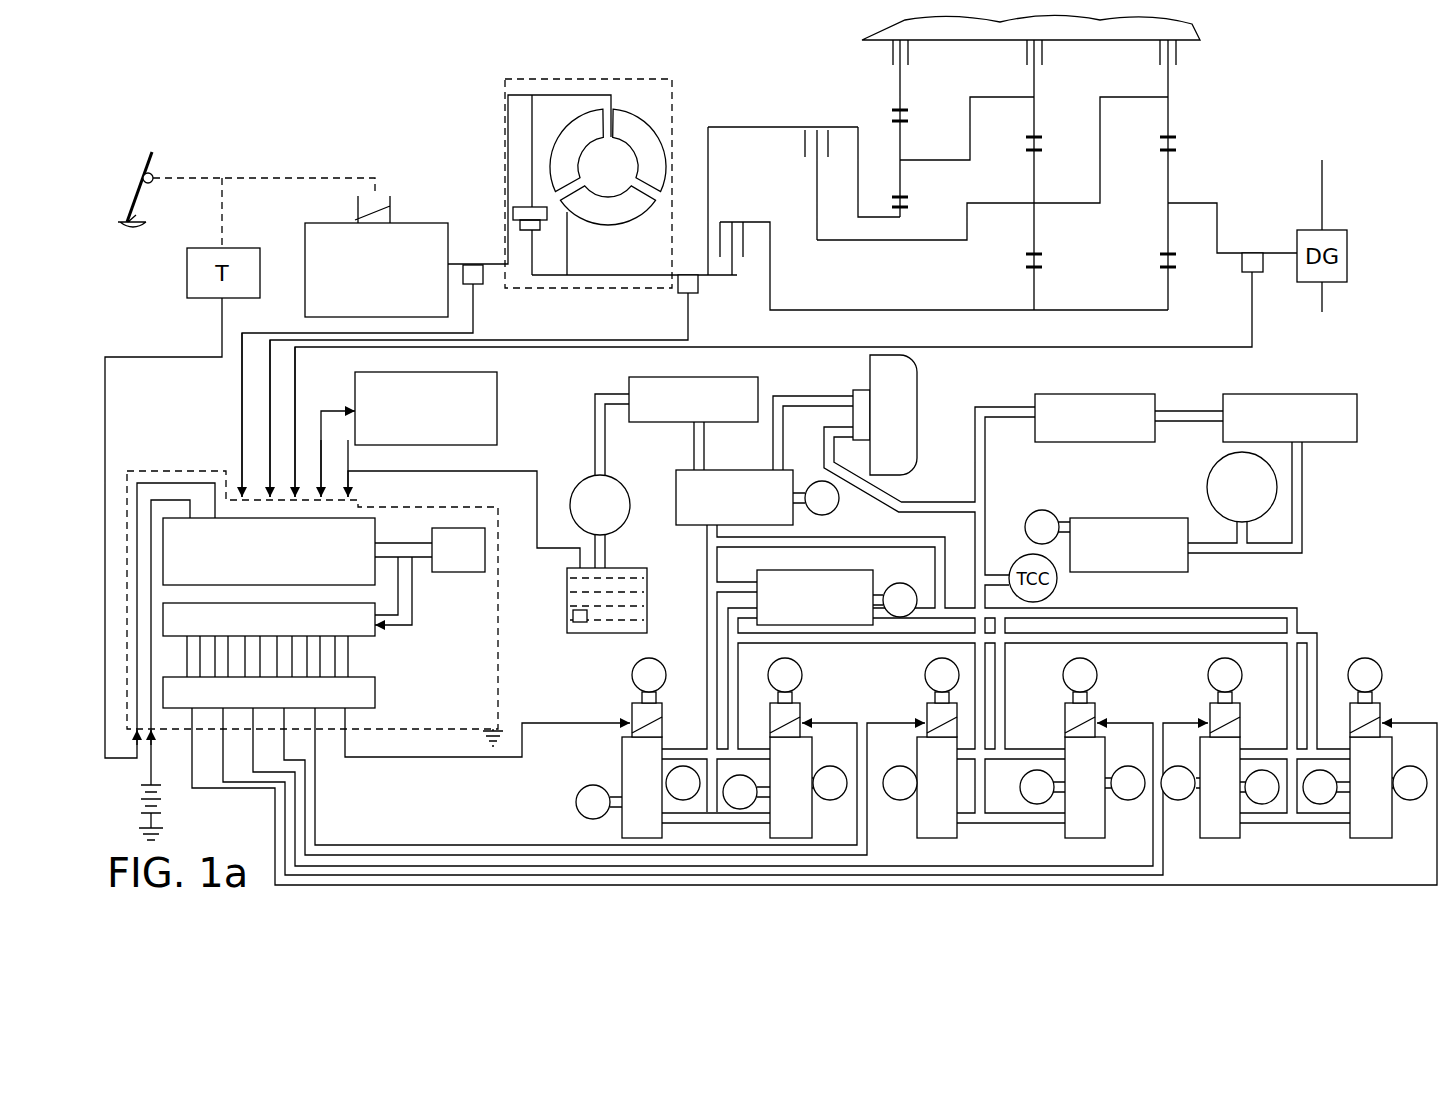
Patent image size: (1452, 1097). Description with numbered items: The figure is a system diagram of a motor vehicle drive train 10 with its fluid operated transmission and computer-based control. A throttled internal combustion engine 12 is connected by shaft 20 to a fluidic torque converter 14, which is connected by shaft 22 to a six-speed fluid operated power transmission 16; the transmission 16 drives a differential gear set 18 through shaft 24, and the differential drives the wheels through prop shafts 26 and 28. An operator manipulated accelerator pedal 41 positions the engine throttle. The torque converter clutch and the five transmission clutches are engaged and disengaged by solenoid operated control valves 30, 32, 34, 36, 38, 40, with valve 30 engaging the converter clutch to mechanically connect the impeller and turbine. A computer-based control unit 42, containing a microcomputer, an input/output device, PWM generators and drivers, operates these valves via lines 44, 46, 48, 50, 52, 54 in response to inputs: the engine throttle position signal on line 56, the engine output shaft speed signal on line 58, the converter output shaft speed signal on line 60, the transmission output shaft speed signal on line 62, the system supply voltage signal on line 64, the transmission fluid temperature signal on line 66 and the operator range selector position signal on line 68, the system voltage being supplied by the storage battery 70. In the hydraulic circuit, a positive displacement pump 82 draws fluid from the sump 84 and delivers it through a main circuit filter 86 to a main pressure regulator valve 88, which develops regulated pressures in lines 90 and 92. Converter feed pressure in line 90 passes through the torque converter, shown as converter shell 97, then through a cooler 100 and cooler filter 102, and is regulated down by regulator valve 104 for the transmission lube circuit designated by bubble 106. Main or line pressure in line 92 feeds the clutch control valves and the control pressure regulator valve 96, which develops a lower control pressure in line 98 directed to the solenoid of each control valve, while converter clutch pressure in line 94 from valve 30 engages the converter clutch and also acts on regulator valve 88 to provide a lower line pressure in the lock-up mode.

The motor vehicle drive train 10 is at (413, 138).
The throttled internal combustion engine 12 is at (410, 222).
The fluidic torque converter 14 is at (528, 72).
The six-speed fluid operated power transmission 16 is at (800, 118).
The differential gear set 18 is at (1300, 275).
The shaft 20 is at (505, 250).
The shaft 22 is at (705, 295).
The shaft 24 is at (1217, 225).
The prop shaft 26 is at (1325, 185).
The prop shaft 28 is at (1325, 300).
The solenoid operated control valve 30 is at (920, 765).
The solenoid operated control valve 32 is at (630, 778).
The solenoid operated control valve 34 is at (810, 760).
The solenoid operated control valve 36 is at (1097, 812).
The solenoid operated control valve 38 is at (1218, 835).
The solenoid operated control valve 40 is at (1375, 828).
The accelerator pedal 41 is at (135, 180).
The computer-based control unit 42 is at (498, 620).
The line 44 is at (305, 768).
The line 46 is at (405, 758).
The line 48 is at (440, 845).
The line 50 is at (300, 792).
The line 52 is at (253, 740).
The line 54 is at (278, 842).
The line 56 is at (107, 483).
The line 58 is at (238, 358).
The line 60 is at (270, 415).
The line 62 is at (297, 387).
The line 64 is at (153, 762).
The line 66 is at (495, 470).
The line 68 is at (323, 440).
The storage battery 70 is at (145, 792).
The positive displacement pump 82 is at (612, 493).
The sump 84 is at (567, 612).
The main circuit filter 86 is at (660, 380).
The main pressure regulator valve 88 is at (765, 478).
The line 90 is at (790, 398).
The line 92 is at (708, 605).
The line 94 is at (833, 556).
The control pressure regulator valve 96 is at (815, 625).
The converter shell 97 is at (880, 393).
The line 98 is at (728, 688).
The cooler 100 is at (1095, 398).
The cooler filter 102 is at (1340, 403).
The regulator valve 104 is at (1178, 548).
The transmission lube circuit 106 is at (1235, 468).